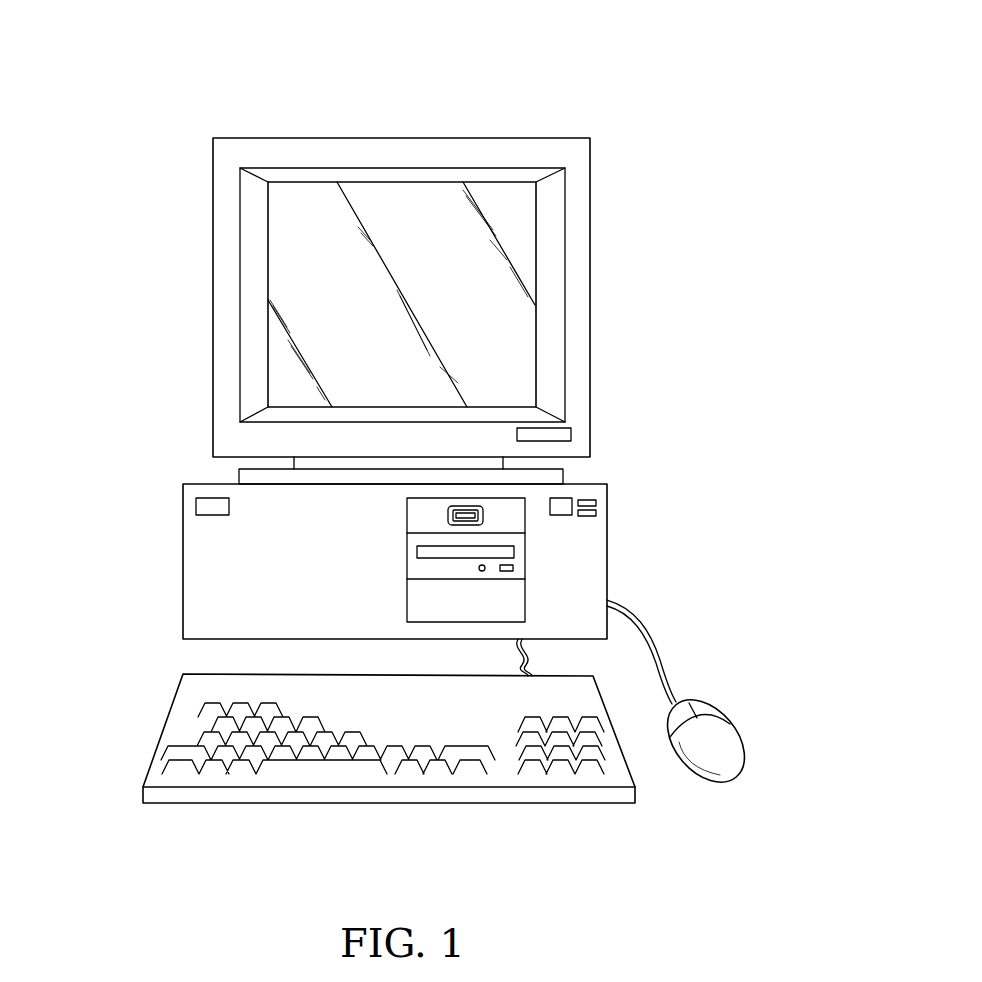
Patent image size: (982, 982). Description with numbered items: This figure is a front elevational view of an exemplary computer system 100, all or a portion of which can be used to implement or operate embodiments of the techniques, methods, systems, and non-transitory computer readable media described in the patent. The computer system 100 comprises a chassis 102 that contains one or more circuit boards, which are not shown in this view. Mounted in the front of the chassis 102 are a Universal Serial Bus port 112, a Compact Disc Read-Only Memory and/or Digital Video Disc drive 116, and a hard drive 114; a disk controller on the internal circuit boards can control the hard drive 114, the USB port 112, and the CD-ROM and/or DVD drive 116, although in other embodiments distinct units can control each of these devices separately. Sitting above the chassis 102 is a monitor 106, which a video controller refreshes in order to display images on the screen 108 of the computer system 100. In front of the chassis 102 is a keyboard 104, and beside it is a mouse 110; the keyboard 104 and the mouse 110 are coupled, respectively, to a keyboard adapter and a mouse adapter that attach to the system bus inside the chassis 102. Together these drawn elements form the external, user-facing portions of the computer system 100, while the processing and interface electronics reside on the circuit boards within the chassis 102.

The computer system 100 is at (585, 115).
The chassis 102 is at (183, 569).
The keyboard 104 is at (164, 733).
The monitor 106 is at (288, 138).
The screen 108 is at (317, 300).
The mouse 110 is at (723, 733).
The Universal Serial Bus (USB) port 112 is at (485, 512).
The hard drive 114 is at (517, 598).
The CD-ROM and/or DVD drive 116 is at (515, 555).